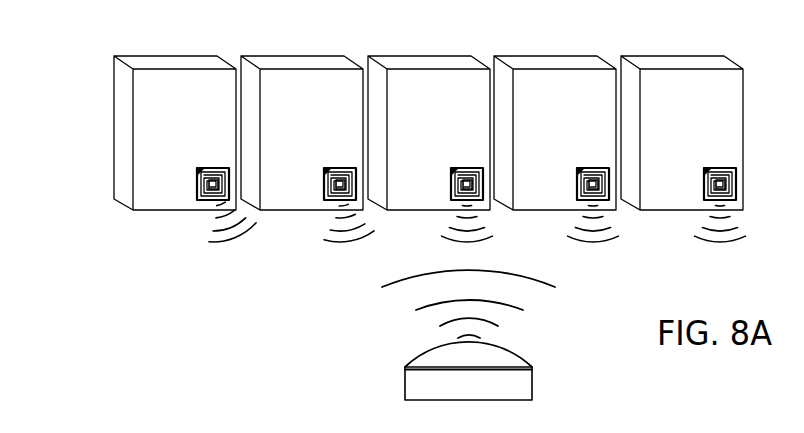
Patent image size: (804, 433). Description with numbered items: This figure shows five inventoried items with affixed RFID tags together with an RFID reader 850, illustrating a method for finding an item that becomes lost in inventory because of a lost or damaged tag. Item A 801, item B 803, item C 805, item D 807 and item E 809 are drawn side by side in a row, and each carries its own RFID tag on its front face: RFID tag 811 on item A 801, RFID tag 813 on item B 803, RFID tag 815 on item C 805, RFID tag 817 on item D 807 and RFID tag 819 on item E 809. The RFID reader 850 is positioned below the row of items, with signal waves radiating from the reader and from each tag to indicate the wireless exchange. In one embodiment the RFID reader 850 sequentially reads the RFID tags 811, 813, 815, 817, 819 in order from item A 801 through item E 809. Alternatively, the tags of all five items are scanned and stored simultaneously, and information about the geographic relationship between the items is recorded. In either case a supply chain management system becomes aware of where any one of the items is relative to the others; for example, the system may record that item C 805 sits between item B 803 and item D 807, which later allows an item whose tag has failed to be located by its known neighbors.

The item A 801 is at (138, 55).
The item B 803 is at (265, 55).
The item C 805 is at (392, 55).
The item D 807 is at (518, 55).
The item E 809 is at (645, 55).
The RFID tag 811 is at (198, 187).
The RFID tag 813 is at (325, 187).
The RFID tag 815 is at (452, 187).
The RFID tag 817 is at (578, 187).
The RFID tag 819 is at (705, 187).
The RFID reader 850 is at (405, 387).